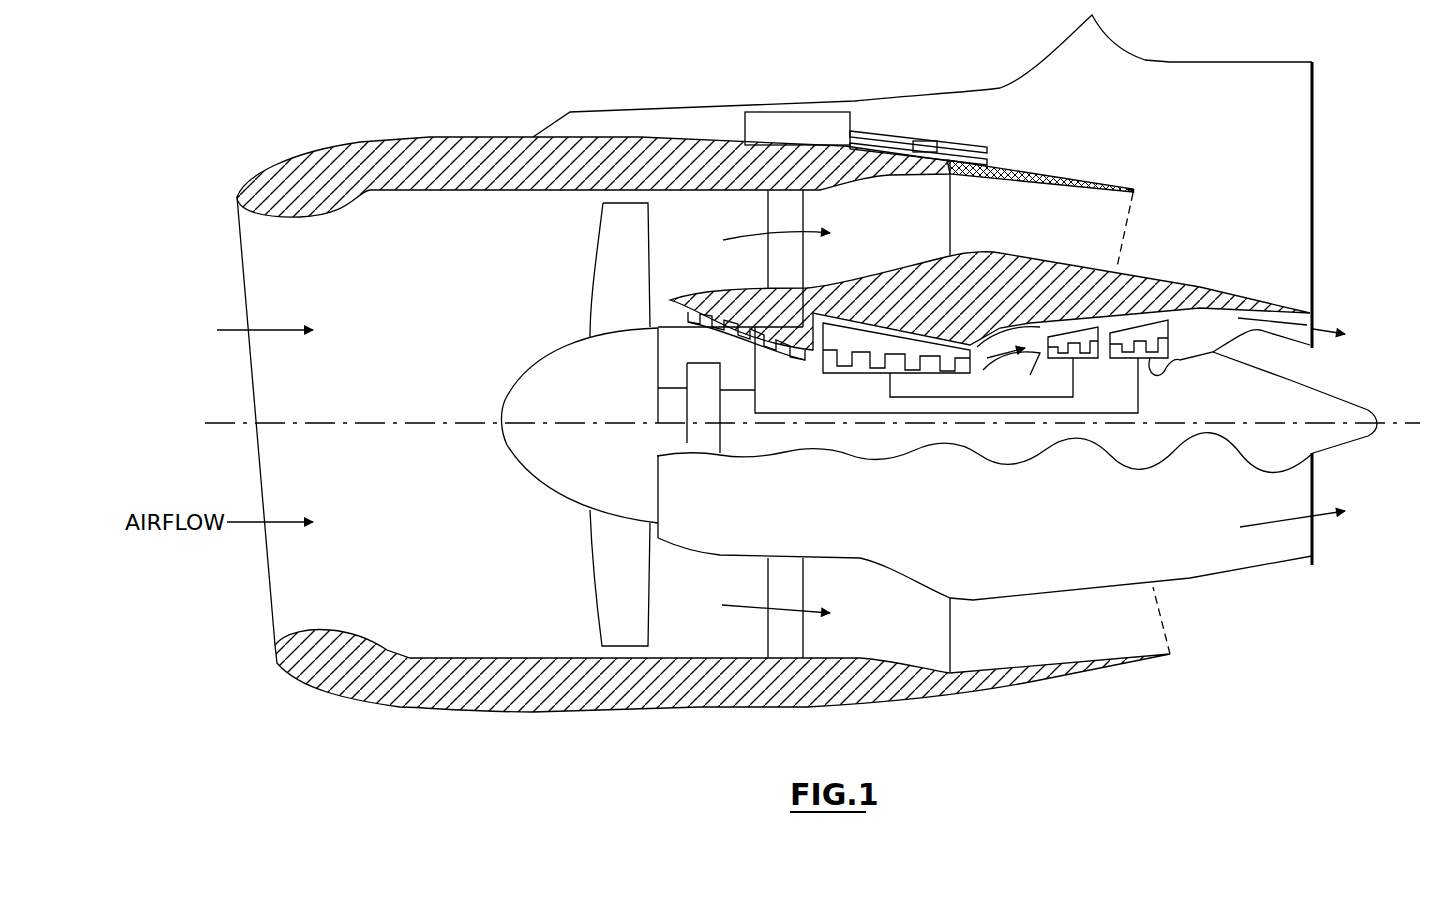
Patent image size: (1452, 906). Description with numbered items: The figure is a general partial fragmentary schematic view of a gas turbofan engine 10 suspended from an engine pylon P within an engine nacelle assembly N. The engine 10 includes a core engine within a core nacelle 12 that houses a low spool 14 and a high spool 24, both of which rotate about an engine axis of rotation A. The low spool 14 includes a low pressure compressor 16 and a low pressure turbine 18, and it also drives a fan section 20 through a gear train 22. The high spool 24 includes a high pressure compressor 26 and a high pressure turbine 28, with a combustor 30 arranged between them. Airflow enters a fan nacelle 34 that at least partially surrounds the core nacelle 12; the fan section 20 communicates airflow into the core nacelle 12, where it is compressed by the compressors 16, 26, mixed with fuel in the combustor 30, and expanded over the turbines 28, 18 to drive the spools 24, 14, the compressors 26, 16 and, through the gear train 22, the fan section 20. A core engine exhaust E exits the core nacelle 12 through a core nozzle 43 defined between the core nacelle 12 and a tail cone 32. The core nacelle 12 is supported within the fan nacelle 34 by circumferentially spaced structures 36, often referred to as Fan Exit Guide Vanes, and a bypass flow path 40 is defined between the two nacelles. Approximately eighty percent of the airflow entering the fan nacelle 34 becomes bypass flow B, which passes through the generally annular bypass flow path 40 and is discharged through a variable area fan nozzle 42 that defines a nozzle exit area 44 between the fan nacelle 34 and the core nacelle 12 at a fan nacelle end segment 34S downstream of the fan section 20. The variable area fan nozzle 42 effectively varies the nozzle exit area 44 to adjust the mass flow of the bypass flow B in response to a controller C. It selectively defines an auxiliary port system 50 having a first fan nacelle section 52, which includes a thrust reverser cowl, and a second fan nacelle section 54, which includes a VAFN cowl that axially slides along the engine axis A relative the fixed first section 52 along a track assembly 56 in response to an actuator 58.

The gas turbofan engine 10 is at (450, 95).
The core nacelle 12 is at (1151, 286).
The low spool 14 is at (955, 418).
The low pressure compressor 16 is at (783, 368).
The low pressure turbine 18 is at (1176, 376).
The fan section 20 is at (603, 576).
The gear train 22 is at (703, 424).
The high spool 24 is at (925, 400).
The high pressure compressor 26 is at (865, 368).
The high pressure turbine 28 is at (1105, 362).
The combustor 30 is at (1025, 362).
The tail cone 32 is at (1313, 397).
The fan nacelle 34 is at (700, 157).
The fan nacelle end segment 34S is at (1114, 188).
The circumferentially spaced structures 36 is at (790, 268).
The bypass flow path 40 is at (712, 233).
The variable area fan nozzle 42 is at (885, 713).
The core nozzle 43 is at (1310, 320).
The nozzle exit area 44 is at (1114, 240).
The auxiliary port system 50 is at (991, 125).
The first fan nacelle section 52 is at (888, 136).
The second fan nacelle section 54 is at (1042, 166).
The track assembly 56 is at (968, 150).
The actuator 58 is at (928, 141).
The engine nacelle assembly N is at (746, 76).
The engine pylon P is at (1287, 130).
The controller C is at (800, 111).
The engine axis of rotation A is at (1405, 424).
The bypass flow B is at (752, 606).
The core engine exhaust E is at (1314, 550).